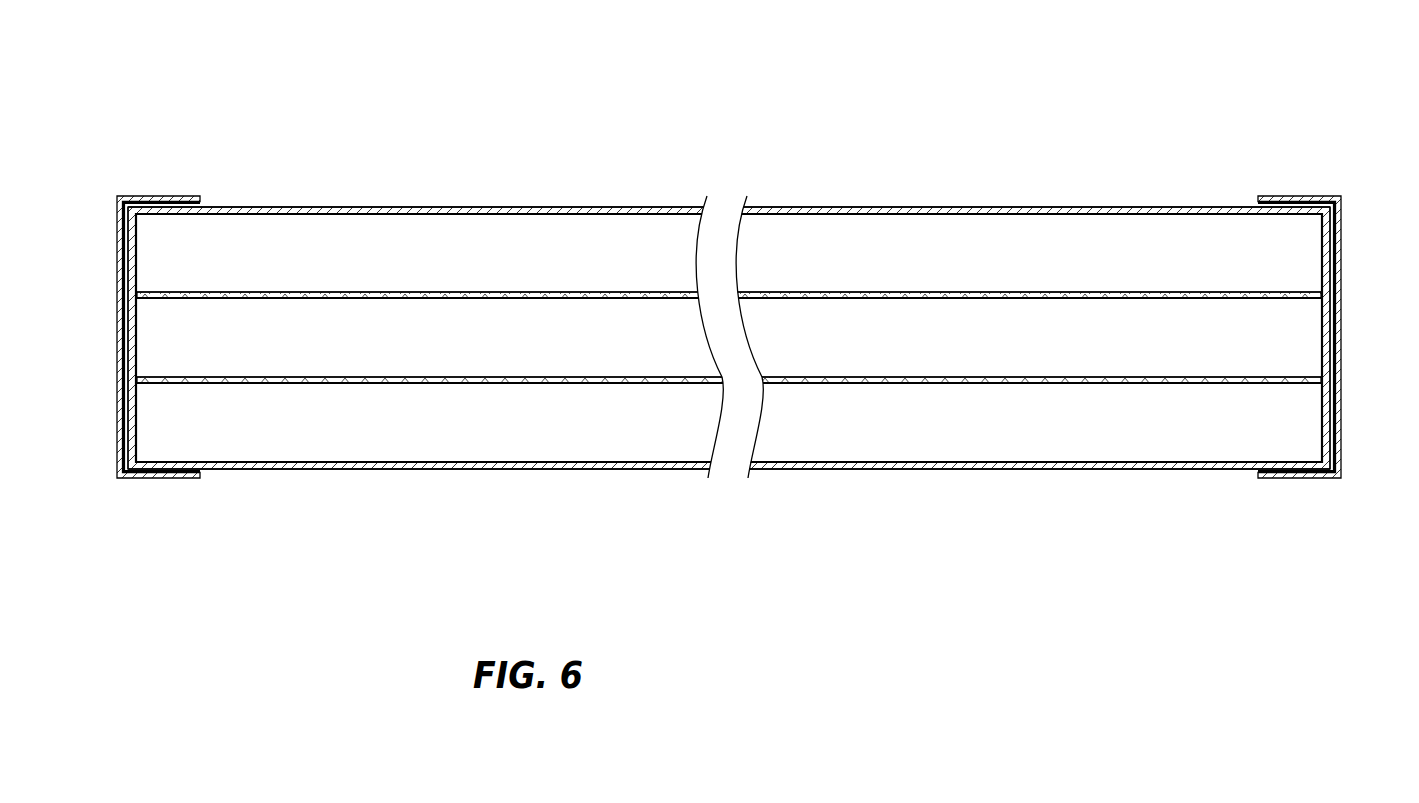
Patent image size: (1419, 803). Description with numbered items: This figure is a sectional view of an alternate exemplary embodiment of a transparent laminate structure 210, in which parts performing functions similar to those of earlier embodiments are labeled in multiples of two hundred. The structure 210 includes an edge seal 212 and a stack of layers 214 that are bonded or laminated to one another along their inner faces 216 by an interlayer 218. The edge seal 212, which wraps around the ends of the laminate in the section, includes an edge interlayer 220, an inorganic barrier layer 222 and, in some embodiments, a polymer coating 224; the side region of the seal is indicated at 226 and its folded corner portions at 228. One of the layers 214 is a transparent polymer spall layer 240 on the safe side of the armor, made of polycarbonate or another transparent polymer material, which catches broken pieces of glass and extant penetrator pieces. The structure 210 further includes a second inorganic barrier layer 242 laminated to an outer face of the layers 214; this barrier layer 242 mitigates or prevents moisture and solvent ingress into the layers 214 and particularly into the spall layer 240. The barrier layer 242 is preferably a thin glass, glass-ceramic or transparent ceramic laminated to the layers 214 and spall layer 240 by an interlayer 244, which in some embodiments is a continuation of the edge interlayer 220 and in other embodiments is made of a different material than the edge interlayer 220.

The transparent laminate structure 210 is at (723, 316).
The edge seal 212 is at (161, 500).
The layers 214 is at (729, 296).
The inner faces 216 is at (938, 288).
The interlayer 218 is at (508, 296).
The edge interlayer 220 is at (1342, 255).
The inorganic barrier layer 222 is at (1338, 343).
The polymer coating 224 is at (1328, 437).
The side portion 226 is at (131, 259).
The folded edge 228 is at (162, 212).
The transparent polymer spall layer 240 is at (729, 422).
The second inorganic barrier layer 242 is at (375, 208).
The interlayer 244 is at (1020, 463).